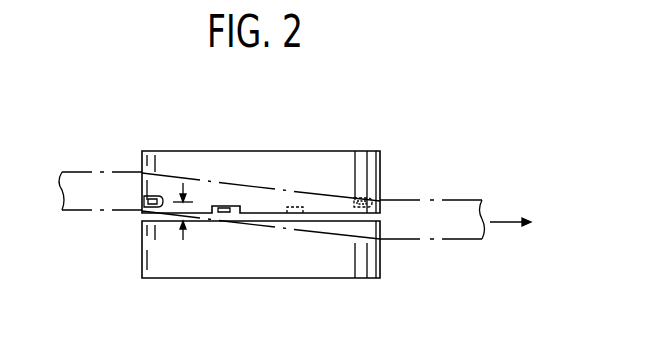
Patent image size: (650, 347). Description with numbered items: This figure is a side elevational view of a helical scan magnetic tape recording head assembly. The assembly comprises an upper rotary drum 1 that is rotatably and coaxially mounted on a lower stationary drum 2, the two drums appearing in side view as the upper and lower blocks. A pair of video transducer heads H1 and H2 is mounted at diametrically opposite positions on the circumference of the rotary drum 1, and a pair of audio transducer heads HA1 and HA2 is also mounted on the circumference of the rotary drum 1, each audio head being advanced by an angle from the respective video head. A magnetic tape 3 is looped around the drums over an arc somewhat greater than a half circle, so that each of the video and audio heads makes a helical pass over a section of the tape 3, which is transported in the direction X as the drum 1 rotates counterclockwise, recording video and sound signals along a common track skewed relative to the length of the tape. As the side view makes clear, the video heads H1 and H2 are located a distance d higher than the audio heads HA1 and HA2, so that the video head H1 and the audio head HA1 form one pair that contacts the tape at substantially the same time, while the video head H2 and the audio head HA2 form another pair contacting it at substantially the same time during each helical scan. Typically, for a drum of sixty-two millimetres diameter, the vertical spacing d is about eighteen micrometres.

The upper rotary drum 1 is at (345, 151).
The lower stationary drum 2 is at (330, 273).
The magnetic tape 3 is at (457, 198).
The video transducer head H1 is at (155, 195).
The video transducer head H2 is at (384, 196).
The audio transducer head HA1 is at (226, 213).
The audio transducer head HA2 is at (293, 202).
The vertical spacing d is at (185, 225).
The tape transport direction X is at (521, 223).